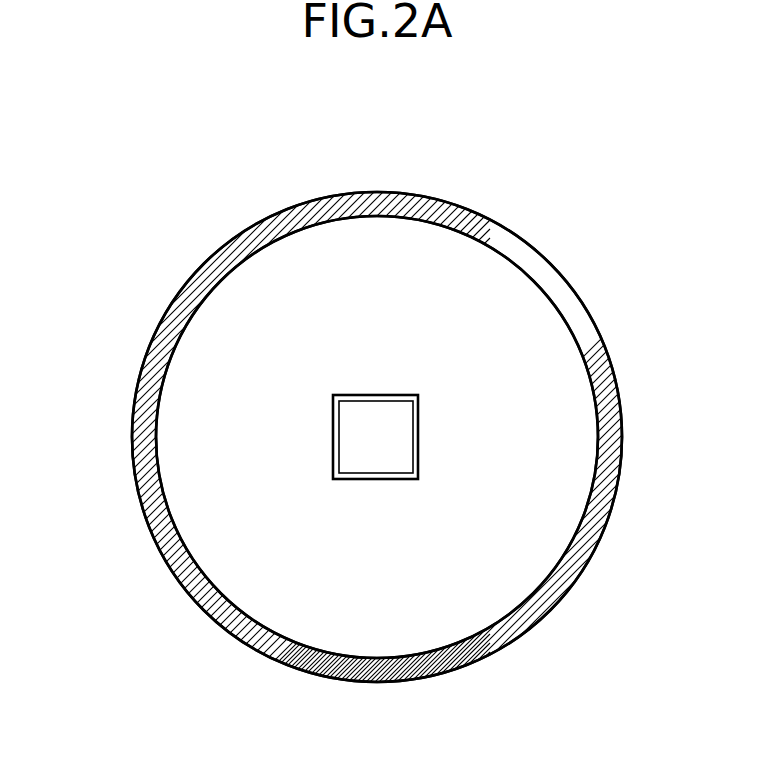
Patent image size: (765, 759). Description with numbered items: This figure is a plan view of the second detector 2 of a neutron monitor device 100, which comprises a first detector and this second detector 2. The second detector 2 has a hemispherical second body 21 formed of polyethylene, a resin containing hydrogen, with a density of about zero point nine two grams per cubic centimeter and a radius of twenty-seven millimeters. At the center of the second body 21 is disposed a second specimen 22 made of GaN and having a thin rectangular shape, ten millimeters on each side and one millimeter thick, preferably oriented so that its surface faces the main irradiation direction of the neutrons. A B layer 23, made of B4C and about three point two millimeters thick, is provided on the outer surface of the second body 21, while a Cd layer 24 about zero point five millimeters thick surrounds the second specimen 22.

The second detector 2 is at (126, 298).
The neutron monitor device 100 is at (614, 146).
The second body 21 is at (185, 369).
The second specimen 22 is at (375, 428).
The B layer 23 is at (528, 240).
The Cd layer 24 is at (345, 395).